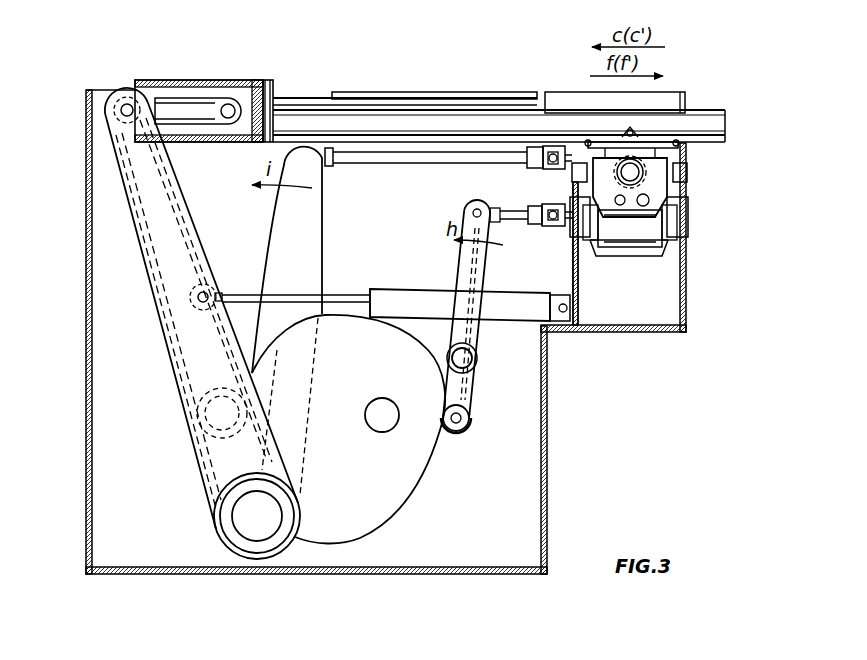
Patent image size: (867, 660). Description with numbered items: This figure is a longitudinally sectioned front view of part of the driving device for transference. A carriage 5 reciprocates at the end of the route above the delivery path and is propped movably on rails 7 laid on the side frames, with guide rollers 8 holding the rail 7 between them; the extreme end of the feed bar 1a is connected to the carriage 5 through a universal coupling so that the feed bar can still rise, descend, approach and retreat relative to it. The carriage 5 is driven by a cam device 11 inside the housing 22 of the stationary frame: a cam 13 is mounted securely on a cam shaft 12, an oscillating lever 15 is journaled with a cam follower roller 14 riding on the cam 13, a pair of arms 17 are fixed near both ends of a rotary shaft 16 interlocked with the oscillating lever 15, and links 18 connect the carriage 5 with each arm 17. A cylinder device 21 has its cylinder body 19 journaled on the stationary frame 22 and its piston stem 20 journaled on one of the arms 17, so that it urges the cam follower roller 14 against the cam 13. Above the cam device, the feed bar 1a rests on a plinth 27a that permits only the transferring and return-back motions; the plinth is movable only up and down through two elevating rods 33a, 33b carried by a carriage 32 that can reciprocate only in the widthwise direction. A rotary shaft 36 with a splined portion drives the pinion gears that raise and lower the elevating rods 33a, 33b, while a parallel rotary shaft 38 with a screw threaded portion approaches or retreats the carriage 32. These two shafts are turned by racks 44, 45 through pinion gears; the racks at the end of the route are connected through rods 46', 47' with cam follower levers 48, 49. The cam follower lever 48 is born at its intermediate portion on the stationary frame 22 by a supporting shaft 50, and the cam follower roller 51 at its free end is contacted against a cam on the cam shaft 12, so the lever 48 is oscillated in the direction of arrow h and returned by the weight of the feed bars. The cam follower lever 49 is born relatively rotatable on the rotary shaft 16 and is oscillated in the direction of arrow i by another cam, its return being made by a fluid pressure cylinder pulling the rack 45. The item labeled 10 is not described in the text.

The feed bar 1a is at (485, 125).
The carriage 5 is at (238, 80).
The rail 7 is at (400, 100).
The guide rollers 8 is at (218, 222).
The block end face 10 is at (272, 110).
The cam device 11 is at (165, 447).
The cam shaft 12 is at (385, 420).
The cam 13 is at (375, 503).
The cam follower roller 14 is at (198, 393).
The oscillating lever 15 is at (257, 437).
The rotary shaft 16 is at (262, 528).
The arm 17 is at (160, 195).
The link 18 is at (178, 110).
The cylinder body 19 is at (408, 300).
The piston stem 20 is at (280, 295).
The cylinder device 21 is at (372, 284).
The stationary frame 22 is at (547, 430).
The plinth 27a is at (660, 158).
The carriage 32 is at (660, 207).
The elevating rod 33a is at (652, 250).
The elevating rod 33b is at (605, 237).
The rotary shaft 36 is at (663, 230).
The rotary shaft 38 is at (652, 185).
The rack 44 is at (577, 255).
The rack 45 is at (578, 155).
The rod 46' is at (531, 235).
The rod 47' is at (448, 182).
The cam follower lever 48 is at (482, 286).
The cam follower lever 49 is at (308, 220).
The supporting shaft 50 is at (465, 362).
The cam follower roller 51 is at (465, 425).